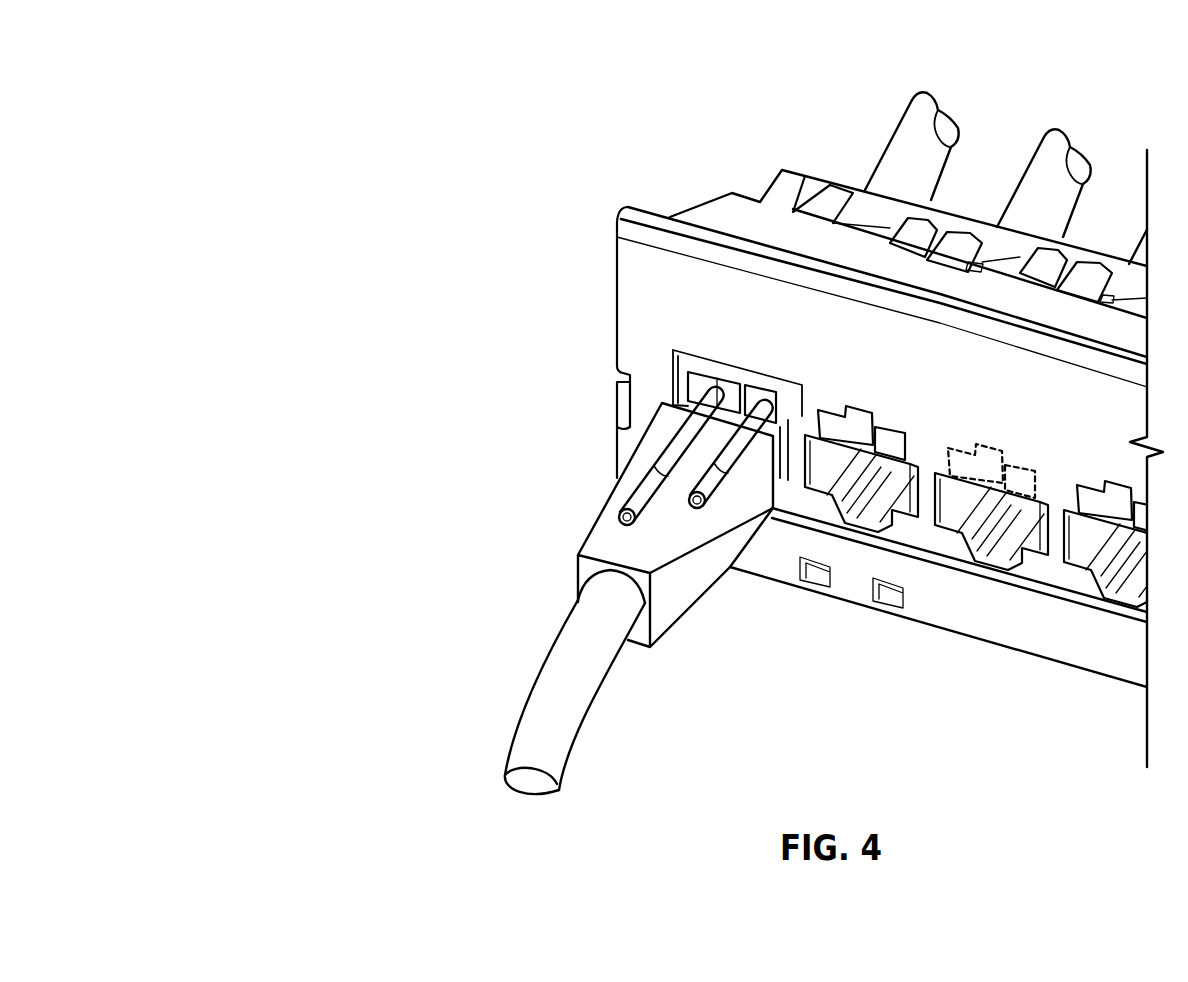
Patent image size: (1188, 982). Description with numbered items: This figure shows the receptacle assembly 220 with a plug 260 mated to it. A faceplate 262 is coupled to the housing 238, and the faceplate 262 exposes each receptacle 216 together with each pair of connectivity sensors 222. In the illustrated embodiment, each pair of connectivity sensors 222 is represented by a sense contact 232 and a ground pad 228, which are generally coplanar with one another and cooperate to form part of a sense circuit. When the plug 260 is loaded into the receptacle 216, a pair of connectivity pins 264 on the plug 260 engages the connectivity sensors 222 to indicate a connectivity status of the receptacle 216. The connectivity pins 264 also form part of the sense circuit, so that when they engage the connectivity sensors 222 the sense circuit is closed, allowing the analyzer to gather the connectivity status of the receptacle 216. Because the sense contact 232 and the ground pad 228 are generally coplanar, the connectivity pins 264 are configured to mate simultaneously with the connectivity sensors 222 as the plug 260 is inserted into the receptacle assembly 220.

The receptacle assembly 220 is at (233, 83).
The housing 238 is at (716, 213).
The faceplate 262 is at (670, 293).
The connectivity pins 264 is at (700, 367).
The sense contact 232 is at (727, 389).
The ground pad 228 is at (760, 392).
The receptacle 216 is at (867, 512).
The connectivity sensors 222 is at (982, 473).
The plug 260 is at (624, 483).